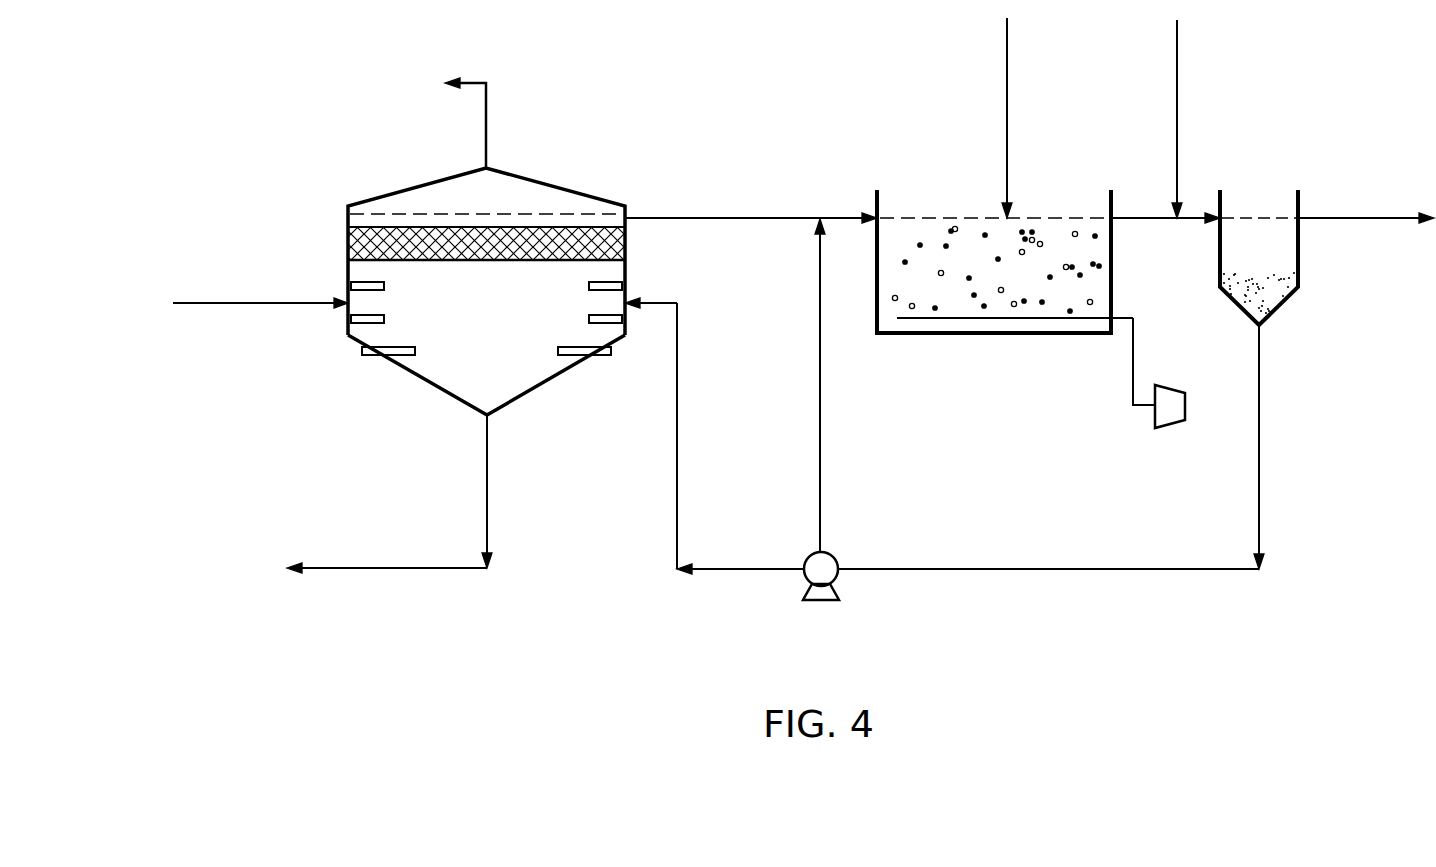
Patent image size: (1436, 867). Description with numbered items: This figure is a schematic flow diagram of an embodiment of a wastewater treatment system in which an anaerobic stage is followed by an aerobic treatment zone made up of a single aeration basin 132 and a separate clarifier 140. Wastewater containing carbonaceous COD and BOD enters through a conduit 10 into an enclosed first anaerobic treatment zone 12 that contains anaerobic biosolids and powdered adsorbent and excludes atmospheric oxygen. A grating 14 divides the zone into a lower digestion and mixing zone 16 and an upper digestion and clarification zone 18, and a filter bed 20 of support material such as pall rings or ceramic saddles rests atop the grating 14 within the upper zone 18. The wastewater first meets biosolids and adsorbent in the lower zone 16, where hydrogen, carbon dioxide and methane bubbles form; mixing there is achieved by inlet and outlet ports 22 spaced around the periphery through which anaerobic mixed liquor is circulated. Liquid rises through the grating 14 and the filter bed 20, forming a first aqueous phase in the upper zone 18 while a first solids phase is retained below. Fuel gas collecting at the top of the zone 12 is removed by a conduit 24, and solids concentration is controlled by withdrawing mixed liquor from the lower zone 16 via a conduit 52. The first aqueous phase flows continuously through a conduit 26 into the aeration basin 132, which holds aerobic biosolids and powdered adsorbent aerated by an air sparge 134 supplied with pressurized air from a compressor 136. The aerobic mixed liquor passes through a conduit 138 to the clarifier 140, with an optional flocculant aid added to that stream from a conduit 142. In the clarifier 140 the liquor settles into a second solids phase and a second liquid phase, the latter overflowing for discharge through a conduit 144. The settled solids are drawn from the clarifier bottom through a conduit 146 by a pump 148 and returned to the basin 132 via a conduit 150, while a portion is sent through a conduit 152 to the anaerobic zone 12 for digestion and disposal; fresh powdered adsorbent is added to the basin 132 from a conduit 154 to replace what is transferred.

The conduit 10 is at (294, 302).
The first anaerobic treatment zone 12 is at (415, 192).
The grating 14 is at (612, 265).
The lower digestion and mixing zone 16 is at (505, 326).
The upper digestion and clarification zone 18 is at (505, 219).
The filter bed 20 is at (626, 239).
The inlet and outlet ports 22 is at (367, 292).
The conduit 24 is at (488, 127).
The conduit 26 is at (789, 215).
The conduit 52 is at (489, 492).
The aeration basin 132 is at (907, 334).
The air sparge 134 is at (978, 320).
The compressor 136 is at (1177, 385).
The conduit 138 is at (1140, 220).
The clarifier 140 is at (1299, 260).
The conduit 142 is at (1179, 70).
The conduit 144 is at (1346, 217).
The conduit 146 is at (1262, 450).
The pump 148 is at (827, 555).
The conduit 150 is at (819, 386).
The conduit 152 is at (679, 472).
The conduit 154 is at (1005, 65).